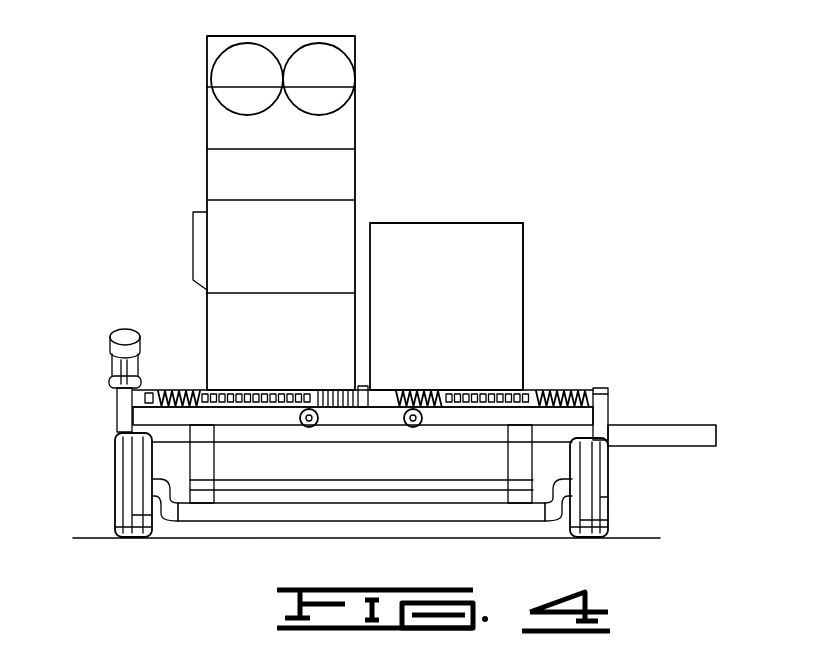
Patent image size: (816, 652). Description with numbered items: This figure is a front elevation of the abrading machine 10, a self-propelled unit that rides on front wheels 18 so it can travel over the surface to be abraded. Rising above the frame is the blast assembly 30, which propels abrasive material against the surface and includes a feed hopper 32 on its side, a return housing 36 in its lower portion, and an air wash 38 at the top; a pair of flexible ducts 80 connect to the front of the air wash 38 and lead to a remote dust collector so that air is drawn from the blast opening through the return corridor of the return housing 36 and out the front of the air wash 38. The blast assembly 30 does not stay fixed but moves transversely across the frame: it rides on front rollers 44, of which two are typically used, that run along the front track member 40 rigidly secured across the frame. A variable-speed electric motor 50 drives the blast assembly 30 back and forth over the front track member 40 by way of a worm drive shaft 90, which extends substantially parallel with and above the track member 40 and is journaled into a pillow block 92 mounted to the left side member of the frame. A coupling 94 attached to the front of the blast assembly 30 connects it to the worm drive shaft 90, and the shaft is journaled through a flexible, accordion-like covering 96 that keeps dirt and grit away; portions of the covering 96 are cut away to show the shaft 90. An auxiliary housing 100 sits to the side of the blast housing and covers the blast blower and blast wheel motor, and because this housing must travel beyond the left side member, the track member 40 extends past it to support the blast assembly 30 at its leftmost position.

The abrading machine 10 is at (508, 168).
The front wheels 18 is at (118, 494).
The blast assembly 30 is at (392, 203).
The feed hopper 32 is at (194, 248).
The return housing 36 is at (236, 343).
The air wash 38 is at (207, 127).
The front track member 40 is at (665, 427).
The front rollers 44 is at (304, 428).
The variable-speed electric motor 50 is at (110, 346).
The flexible ducts 80 is at (215, 62).
The worm drive shaft 90 is at (472, 400).
The pillow block 92 is at (610, 392).
The coupling 94 is at (375, 400).
The accordion-like covering 96 is at (545, 400).
The auxiliary housing 100 is at (523, 250).